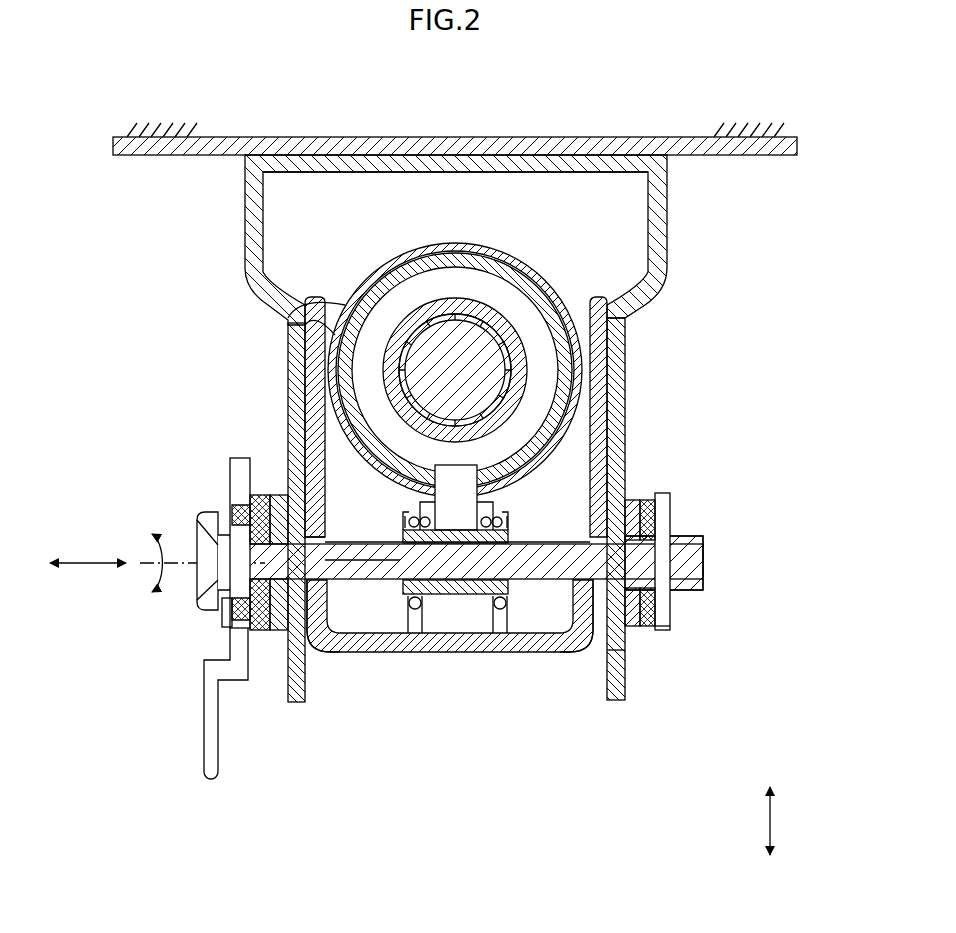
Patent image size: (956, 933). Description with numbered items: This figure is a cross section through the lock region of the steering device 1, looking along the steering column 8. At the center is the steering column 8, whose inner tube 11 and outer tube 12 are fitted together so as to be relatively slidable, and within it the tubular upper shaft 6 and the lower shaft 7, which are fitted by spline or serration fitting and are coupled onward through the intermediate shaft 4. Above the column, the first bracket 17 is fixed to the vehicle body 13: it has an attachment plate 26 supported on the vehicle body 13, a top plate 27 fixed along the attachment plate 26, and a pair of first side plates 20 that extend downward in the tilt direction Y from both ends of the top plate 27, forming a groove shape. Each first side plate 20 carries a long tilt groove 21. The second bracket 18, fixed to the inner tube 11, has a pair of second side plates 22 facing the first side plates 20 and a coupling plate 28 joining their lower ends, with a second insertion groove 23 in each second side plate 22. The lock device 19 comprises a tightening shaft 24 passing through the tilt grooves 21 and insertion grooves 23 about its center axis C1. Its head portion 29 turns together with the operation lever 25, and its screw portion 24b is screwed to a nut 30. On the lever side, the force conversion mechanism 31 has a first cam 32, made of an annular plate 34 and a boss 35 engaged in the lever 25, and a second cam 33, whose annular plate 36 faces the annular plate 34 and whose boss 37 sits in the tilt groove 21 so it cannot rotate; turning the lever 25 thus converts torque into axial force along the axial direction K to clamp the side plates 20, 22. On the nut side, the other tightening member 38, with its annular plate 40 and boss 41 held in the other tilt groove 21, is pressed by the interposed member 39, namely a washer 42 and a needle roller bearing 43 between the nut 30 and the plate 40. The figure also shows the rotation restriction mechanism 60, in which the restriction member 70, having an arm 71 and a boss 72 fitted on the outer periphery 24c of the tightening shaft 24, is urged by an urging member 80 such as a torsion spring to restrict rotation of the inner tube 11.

The steering device 1 is at (770, 196).
The intermediate shaft 4 is at (528, 370).
The upper shaft 6 is at (498, 328).
The lower shaft 7 is at (495, 372).
The steering column 8 is at (255, 303).
The inner tube 11 is at (348, 305).
The outer tube 12 is at (332, 335).
The vehicle body 13 is at (198, 130).
The first bracket 17 is at (496, 240).
The second bracket 18 is at (465, 499).
The lock device 19 is at (171, 537).
The first side plate 20 is at (290, 380).
The long tilt groove 21 is at (275, 495).
The second side plate 22 is at (315, 410).
The second insertion groove 23 is at (328, 640).
The tightening shaft 24 is at (430, 643).
The screw portion 24b is at (638, 584).
The outer periphery 24c is at (398, 650).
The operation lever 25 is at (205, 745).
The attachment plate 26 is at (520, 138).
The top plate 27 is at (398, 170).
The coupling plate 28 is at (450, 653).
The head portion 29 is at (205, 520).
The nut 30 is at (703, 583).
The force conversion mechanism 31 is at (296, 648).
The first cam 32 is at (262, 636).
The second cam 33 is at (290, 636).
The annular plate 34 is at (235, 630).
The boss 35 is at (230, 605).
The annular plate 36 is at (250, 500).
The boss 37 is at (305, 512).
The other tightening member 38 is at (663, 710).
The interposed member 39 is at (713, 551).
The annular plate 40 is at (663, 632).
The boss 41 is at (618, 652).
The washer 42 is at (672, 500).
The needle roller bearing 43 is at (670, 520).
The rotation restriction mechanism 60 is at (507, 520).
The restriction member 70 is at (459, 609).
The arm 71 is at (470, 530).
The boss 72 is at (455, 505).
The urging member 80 is at (405, 520).
The center axis C1 is at (155, 560).
The axial direction K is at (90, 566).
The tilt direction Y is at (778, 825).